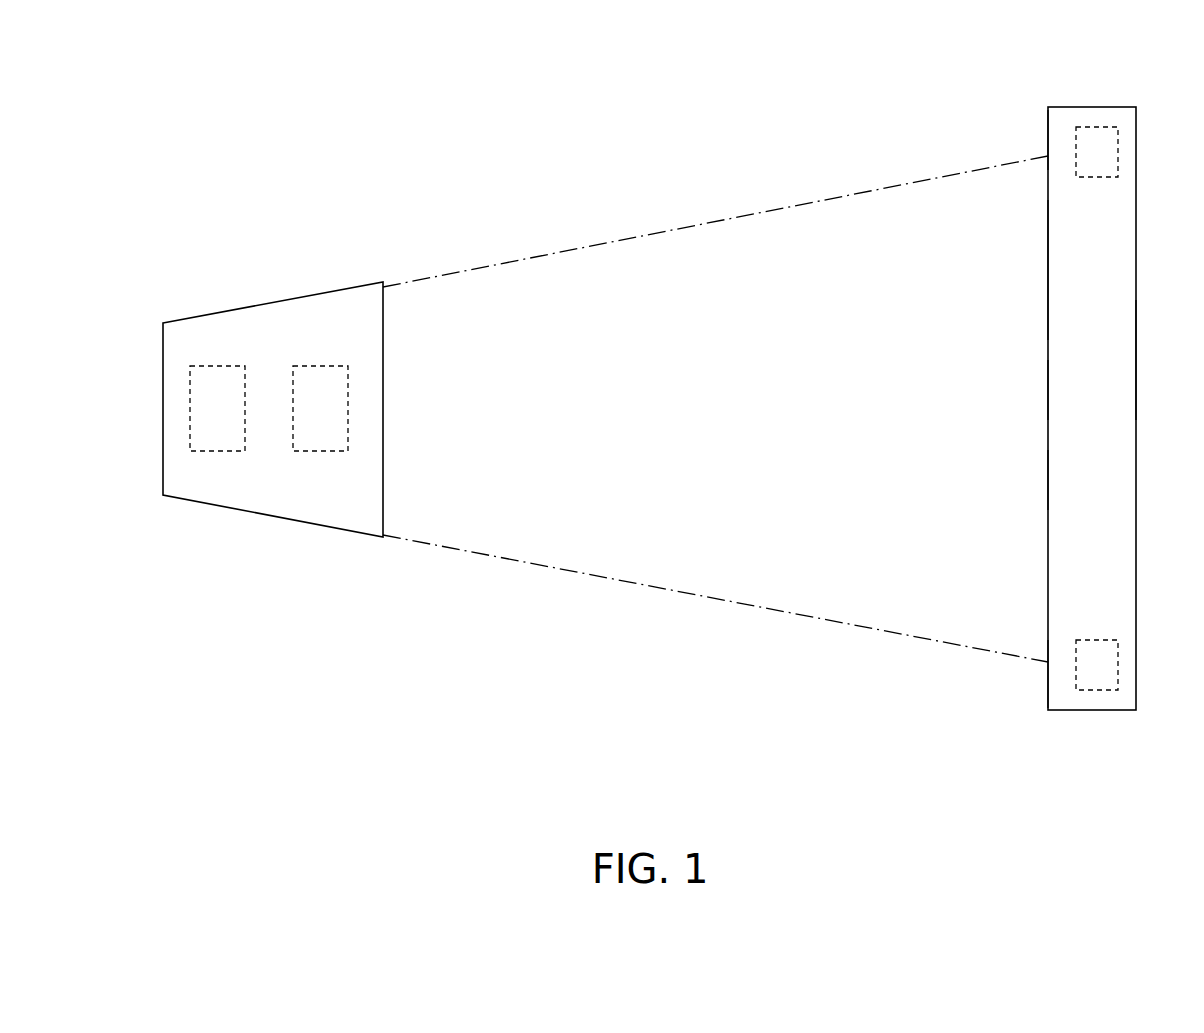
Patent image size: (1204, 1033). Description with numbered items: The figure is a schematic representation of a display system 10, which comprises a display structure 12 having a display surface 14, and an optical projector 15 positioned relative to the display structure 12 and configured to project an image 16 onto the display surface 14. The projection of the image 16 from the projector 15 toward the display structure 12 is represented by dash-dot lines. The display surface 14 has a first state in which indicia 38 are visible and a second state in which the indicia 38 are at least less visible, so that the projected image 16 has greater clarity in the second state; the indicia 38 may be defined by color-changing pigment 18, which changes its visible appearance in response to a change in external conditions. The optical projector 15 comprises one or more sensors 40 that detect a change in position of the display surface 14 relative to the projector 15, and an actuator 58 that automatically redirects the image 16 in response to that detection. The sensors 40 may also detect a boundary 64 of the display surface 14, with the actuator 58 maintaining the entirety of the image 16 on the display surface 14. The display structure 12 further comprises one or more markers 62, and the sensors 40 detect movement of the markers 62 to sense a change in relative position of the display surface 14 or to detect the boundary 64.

The display system 10 is at (205, 124).
The display structure 12 is at (1092, 86).
The display surface 14 is at (1049, 273).
The optical projector 15 is at (267, 300).
The image 16 is at (1048, 478).
The color-changing pigment 18 is at (1095, 360).
The indicia 38 is at (1048, 390).
The sensors 40 is at (325, 451).
The actuator 58 is at (225, 451).
The markers 62 is at (1118, 157).
The boundary 64 is at (1048, 128).